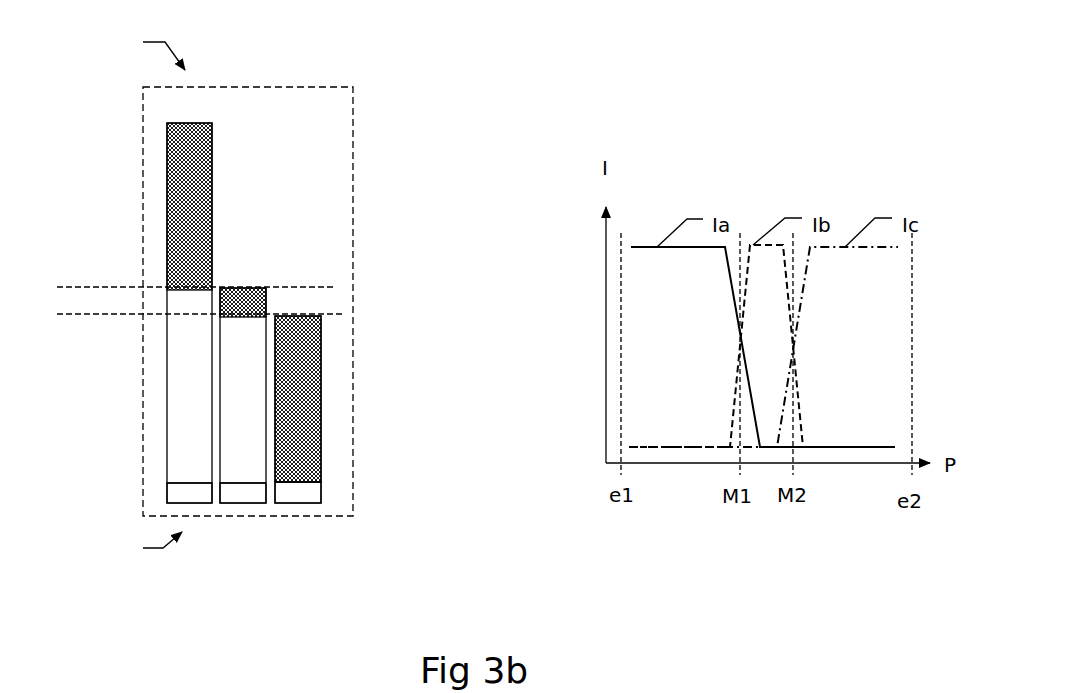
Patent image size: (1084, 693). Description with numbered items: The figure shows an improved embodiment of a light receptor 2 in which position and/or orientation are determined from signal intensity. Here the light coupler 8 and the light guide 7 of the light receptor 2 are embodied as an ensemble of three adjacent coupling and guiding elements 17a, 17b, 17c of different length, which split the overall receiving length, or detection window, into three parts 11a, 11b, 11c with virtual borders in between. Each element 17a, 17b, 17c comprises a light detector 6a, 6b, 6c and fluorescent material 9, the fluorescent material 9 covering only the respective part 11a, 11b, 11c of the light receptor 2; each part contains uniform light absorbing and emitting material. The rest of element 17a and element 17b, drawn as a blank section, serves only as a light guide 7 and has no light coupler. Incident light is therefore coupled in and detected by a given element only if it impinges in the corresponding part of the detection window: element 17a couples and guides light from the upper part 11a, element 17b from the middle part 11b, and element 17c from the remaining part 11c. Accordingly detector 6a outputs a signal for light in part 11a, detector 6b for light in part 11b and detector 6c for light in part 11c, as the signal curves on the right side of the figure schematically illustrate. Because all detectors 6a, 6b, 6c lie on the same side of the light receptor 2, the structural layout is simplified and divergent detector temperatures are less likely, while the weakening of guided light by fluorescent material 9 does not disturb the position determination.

The light receptor 2 is at (245, 42).
The light guide 7 is at (298, 87).
The light coupler 8 is at (298, 87).
The fluorescent material 9 is at (168, 147).
The upper part of the detection window 11a is at (153, 173).
The middle part of the detection window 11b is at (163, 300).
The lower part of the detection window 11c is at (153, 435).
The first coupling and guiding element 17a is at (224, 168).
The second coupling and guiding element 17b is at (267, 272).
The third coupling and guiding element 17c is at (343, 377).
The first light detector 6a is at (173, 495).
The second light detector 6b is at (237, 495).
The third light detector 6c is at (305, 495).